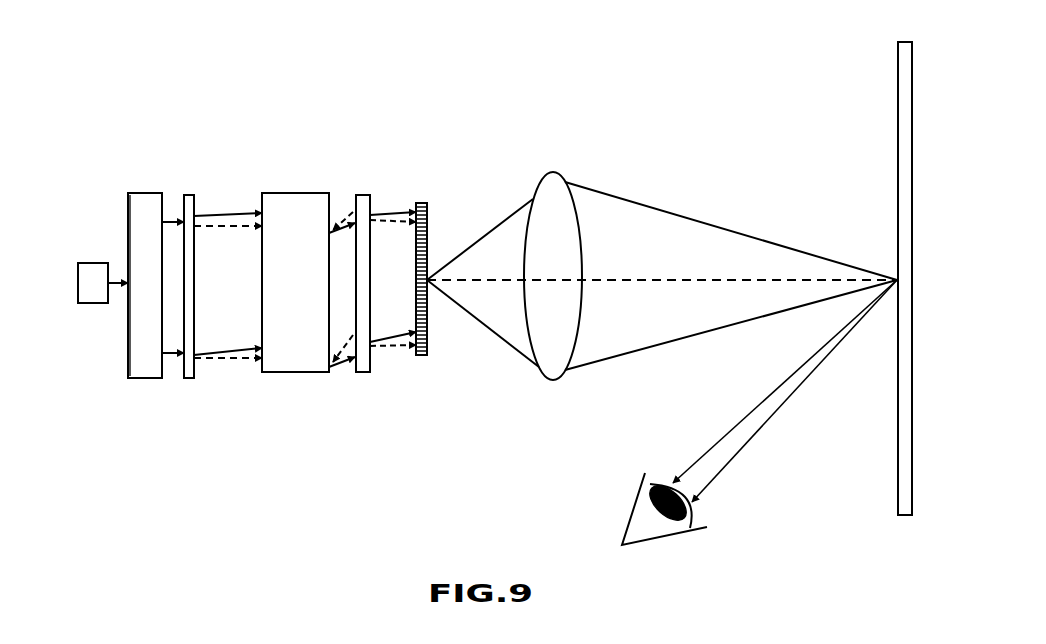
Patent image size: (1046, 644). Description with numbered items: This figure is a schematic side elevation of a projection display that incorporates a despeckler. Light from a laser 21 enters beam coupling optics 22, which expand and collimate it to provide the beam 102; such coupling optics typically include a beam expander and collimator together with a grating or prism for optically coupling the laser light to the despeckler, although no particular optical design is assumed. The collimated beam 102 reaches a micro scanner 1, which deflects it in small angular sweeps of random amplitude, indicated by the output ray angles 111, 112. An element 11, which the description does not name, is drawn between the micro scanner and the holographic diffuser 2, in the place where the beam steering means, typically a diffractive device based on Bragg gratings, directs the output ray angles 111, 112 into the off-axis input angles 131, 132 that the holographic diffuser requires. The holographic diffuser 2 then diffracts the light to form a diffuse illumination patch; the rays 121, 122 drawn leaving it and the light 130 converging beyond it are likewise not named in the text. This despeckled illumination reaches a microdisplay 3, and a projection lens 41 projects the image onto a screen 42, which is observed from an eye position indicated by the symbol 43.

The laser 21 is at (107, 303).
The beam coupling optics 22 is at (160, 193).
The beam 102 is at (170, 380).
The micro scanner 1 is at (190, 380).
The output ray angle 111 is at (251, 222).
The output ray angle 112 is at (251, 241).
The light modulating element 11 is at (293, 373).
The input angle 131 is at (689, 193).
The input angle 132 is at (615, 312).
The holographic diffuser 2 is at (365, 375).
The first light component 121 is at (426, 240).
The second light component 122 is at (426, 258).
The microdisplay 3 is at (427, 253).
The diffracted light 130 is at (500, 340).
The projection lens 41 is at (550, 382).
The screen 42 is at (897, 98).
The eye position 43 is at (710, 520).